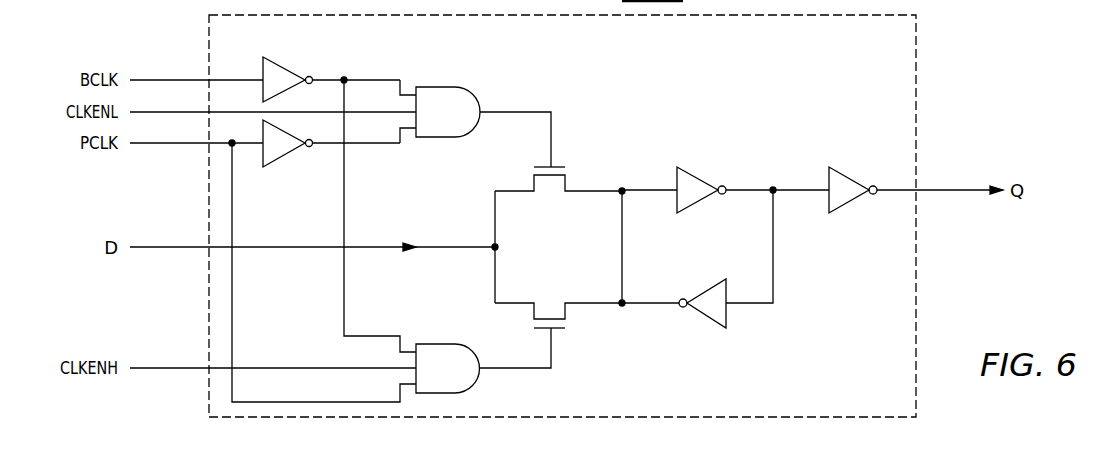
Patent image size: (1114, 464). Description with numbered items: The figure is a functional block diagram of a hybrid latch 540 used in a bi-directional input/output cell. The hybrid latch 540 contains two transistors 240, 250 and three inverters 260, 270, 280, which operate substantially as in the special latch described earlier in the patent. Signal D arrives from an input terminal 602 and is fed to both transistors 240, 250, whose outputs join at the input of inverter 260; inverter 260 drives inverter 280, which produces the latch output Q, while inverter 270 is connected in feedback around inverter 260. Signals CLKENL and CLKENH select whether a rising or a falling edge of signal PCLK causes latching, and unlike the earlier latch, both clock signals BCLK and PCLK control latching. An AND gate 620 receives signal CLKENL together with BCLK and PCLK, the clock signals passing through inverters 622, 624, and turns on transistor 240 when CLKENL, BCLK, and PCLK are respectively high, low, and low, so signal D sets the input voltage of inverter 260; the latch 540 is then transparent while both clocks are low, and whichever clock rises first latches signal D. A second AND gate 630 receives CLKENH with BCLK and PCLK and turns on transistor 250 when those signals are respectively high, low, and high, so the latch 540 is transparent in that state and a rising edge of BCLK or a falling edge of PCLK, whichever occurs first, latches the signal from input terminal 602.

The hybrid latch 540 is at (978, 30).
The input terminal 602 is at (162, 251).
The inverter 622 is at (283, 62).
The inverter 624 is at (286, 161).
The AND gate 620 is at (437, 87).
The AND gate 630 is at (437, 344).
The transistor 240 is at (567, 184).
The transistor 250 is at (568, 313).
The inverter 260 is at (696, 175).
The inverter 270 is at (705, 322).
The inverter 280 is at (849, 176).